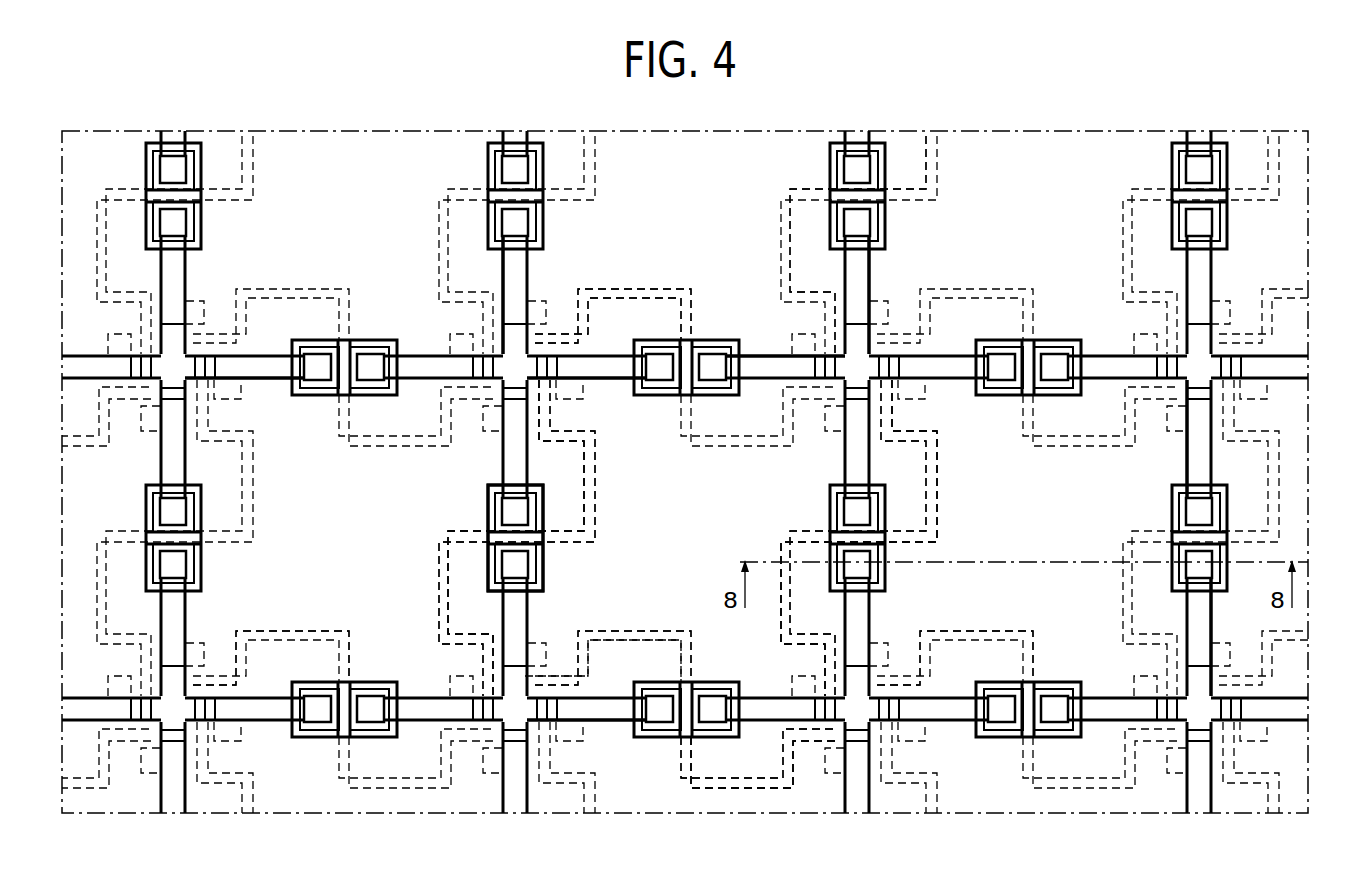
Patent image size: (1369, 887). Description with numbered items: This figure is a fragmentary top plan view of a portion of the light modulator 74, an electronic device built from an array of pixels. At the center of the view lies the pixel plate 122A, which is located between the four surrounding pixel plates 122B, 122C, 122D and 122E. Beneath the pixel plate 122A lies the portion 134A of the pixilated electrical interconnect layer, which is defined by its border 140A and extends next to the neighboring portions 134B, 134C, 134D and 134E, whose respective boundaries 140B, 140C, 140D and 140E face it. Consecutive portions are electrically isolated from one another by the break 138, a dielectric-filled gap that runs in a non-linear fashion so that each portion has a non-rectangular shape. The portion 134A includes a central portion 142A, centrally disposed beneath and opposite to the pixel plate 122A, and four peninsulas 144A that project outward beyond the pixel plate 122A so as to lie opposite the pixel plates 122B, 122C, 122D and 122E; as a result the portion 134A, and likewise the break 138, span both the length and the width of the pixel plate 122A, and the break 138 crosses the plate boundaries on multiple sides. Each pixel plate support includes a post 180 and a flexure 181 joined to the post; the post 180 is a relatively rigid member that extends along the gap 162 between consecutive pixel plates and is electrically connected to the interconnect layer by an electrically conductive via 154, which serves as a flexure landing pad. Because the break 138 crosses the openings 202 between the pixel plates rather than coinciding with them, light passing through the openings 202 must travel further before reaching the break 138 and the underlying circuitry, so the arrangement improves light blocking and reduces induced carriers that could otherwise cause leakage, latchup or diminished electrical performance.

The light modulator 74 is at (153, 72).
The pixel plate 122A is at (760, 504).
The pixel plate 122B is at (325, 504).
The pixel plate 122C is at (738, 211).
The pixel plate 122D is at (1106, 529).
The pixel plate 122E is at (660, 786).
The portion of electrical interconnect layer 134A is at (771, 690).
The portion of electrical interconnect layer 134B is at (289, 592).
The portion of electrical interconnect layer 134C is at (791, 155).
The portion of electrical interconnect layer 134D is at (975, 600).
The portion of electrical interconnect layer 134E is at (714, 805).
The break 138 is at (611, 640).
The border 140A is at (689, 650).
The boundary 140B is at (432, 602).
The boundary 140C is at (630, 290).
The boundary 140D is at (921, 492).
The boundary 140E is at (752, 787).
The central portion 142A is at (655, 532).
The peninsulas 144A is at (662, 316).
The electrically conductive via 154 is at (495, 510).
The gap 162 is at (1212, 682).
The post 180 is at (707, 343).
The flexure 181 is at (756, 345).
The openings 202 is at (505, 338).